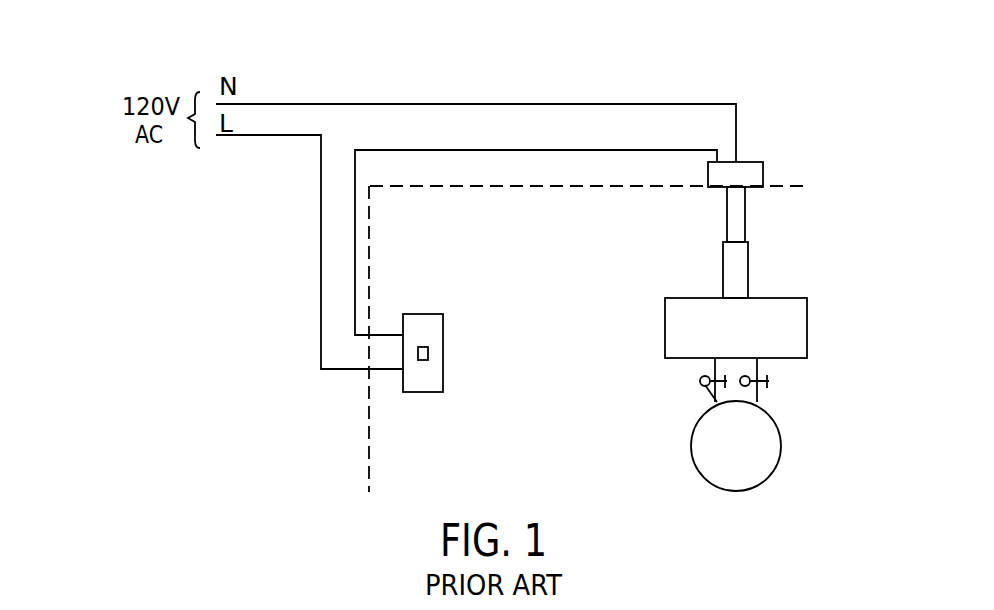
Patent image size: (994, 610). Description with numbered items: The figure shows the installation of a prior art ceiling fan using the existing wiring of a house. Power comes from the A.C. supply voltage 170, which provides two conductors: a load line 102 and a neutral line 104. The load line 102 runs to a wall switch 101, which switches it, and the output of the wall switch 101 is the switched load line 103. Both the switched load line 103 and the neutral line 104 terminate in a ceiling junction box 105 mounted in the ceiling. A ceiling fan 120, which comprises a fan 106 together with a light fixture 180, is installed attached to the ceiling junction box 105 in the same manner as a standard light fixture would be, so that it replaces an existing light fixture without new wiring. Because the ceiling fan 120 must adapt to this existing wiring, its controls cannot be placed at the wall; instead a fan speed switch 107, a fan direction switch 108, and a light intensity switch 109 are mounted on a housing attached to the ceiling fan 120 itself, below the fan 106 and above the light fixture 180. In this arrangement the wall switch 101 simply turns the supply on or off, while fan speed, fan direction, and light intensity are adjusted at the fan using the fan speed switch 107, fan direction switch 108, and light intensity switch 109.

The A.C. supply voltage 170 is at (190, 73).
The neutral line 104 is at (475, 93).
The load line 102 is at (318, 360).
The switched load line 103 is at (515, 145).
The wall switch 101 is at (457, 360).
The ceiling junction box 105 is at (785, 167).
The ceiling fan 120 is at (640, 205).
The fan 106 is at (807, 317).
The fan speed switch 107 is at (769, 377).
The fan direction switch 108 is at (746, 392).
The light intensity switch 109 is at (717, 402).
The light fixture 180 is at (782, 453).